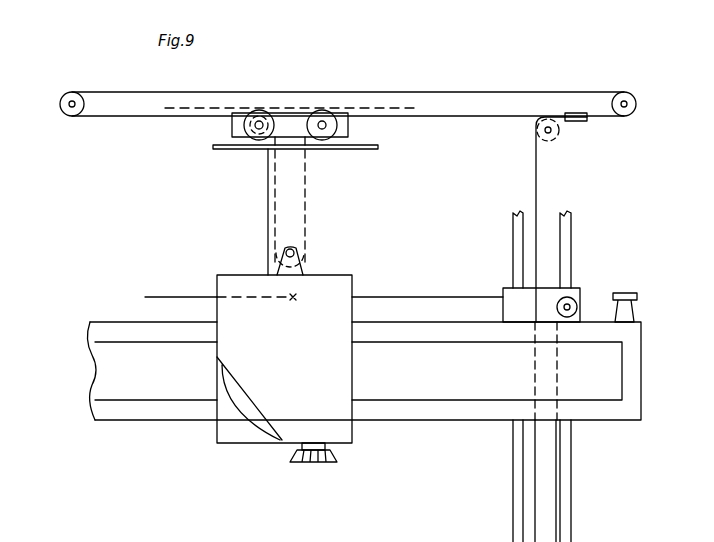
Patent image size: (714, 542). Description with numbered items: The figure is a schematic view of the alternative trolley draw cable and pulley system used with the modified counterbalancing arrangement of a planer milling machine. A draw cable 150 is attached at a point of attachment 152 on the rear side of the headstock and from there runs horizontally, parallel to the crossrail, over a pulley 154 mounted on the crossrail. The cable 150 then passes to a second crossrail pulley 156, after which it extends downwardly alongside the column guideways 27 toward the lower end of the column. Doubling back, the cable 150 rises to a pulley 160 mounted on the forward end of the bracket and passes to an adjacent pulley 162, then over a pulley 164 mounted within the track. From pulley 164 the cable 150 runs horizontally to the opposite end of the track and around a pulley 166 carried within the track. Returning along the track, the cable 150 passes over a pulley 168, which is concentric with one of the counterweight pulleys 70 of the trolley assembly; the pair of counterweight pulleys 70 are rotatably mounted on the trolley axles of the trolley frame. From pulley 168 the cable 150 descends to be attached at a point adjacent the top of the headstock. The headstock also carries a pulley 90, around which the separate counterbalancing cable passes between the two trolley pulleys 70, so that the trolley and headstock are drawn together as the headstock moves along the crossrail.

The guideways 27 is at (517, 500).
The counterweight pulleys 70 is at (257, 141).
The pulley 90 is at (300, 240).
The cable 150 is at (537, 181).
The point of attachment 152 is at (293, 301).
The pulley 154 is at (625, 291).
The pulley 156 is at (573, 299).
The pulley 160 is at (550, 143).
The pulley 162 is at (567, 112).
The pulley 164 is at (623, 121).
The pulley 166 is at (60, 104).
The pulley 168 is at (265, 112).